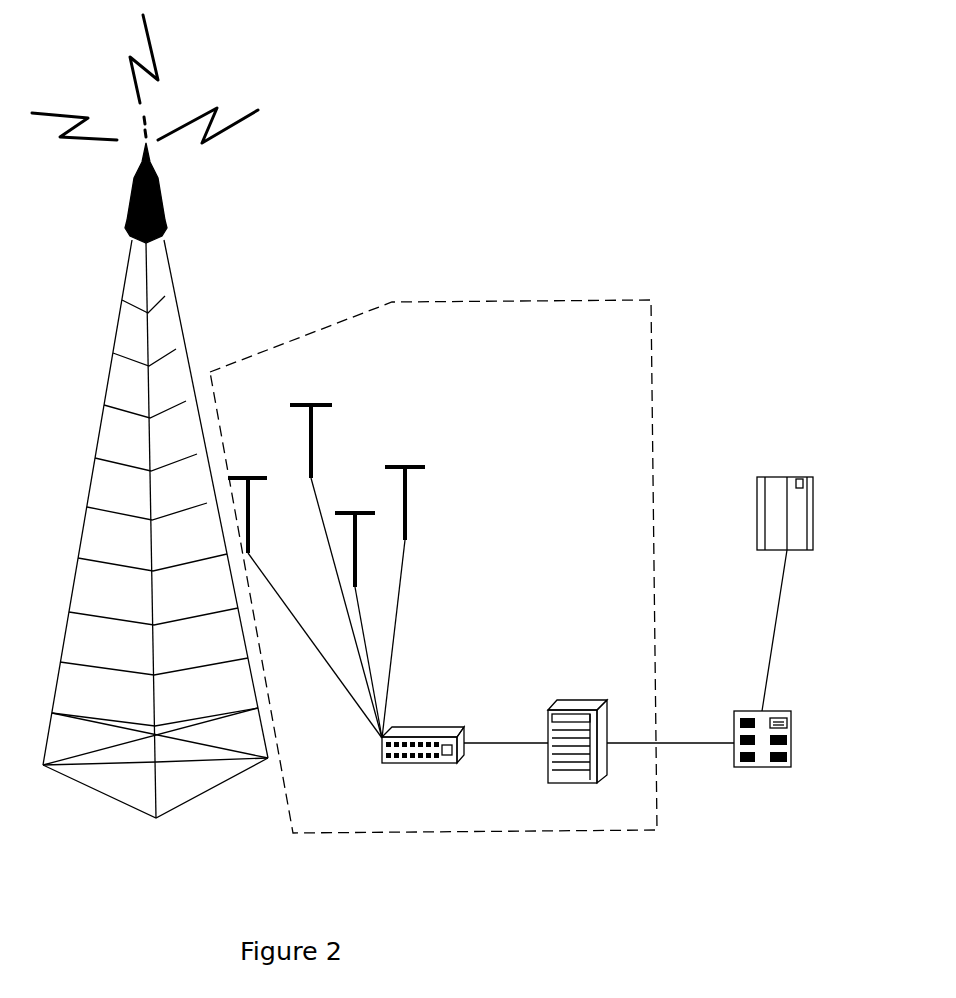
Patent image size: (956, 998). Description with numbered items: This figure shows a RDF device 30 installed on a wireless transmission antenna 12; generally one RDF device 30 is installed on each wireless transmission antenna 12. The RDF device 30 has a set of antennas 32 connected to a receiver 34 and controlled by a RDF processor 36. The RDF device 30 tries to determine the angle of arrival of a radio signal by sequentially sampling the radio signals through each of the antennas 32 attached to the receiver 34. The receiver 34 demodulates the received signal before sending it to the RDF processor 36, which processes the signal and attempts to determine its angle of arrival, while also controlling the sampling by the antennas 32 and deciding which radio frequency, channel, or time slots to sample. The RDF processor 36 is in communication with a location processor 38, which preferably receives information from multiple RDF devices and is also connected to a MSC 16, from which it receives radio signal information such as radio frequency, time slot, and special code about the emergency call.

The wireless transmission antenna 12 is at (207, 270).
The RDF device 30 is at (577, 298).
The antennas 32 is at (250, 460).
The receiver 34 is at (428, 703).
The RDF processor 36 is at (585, 682).
The MSC 16 is at (803, 460).
The location processor 38 is at (808, 733).